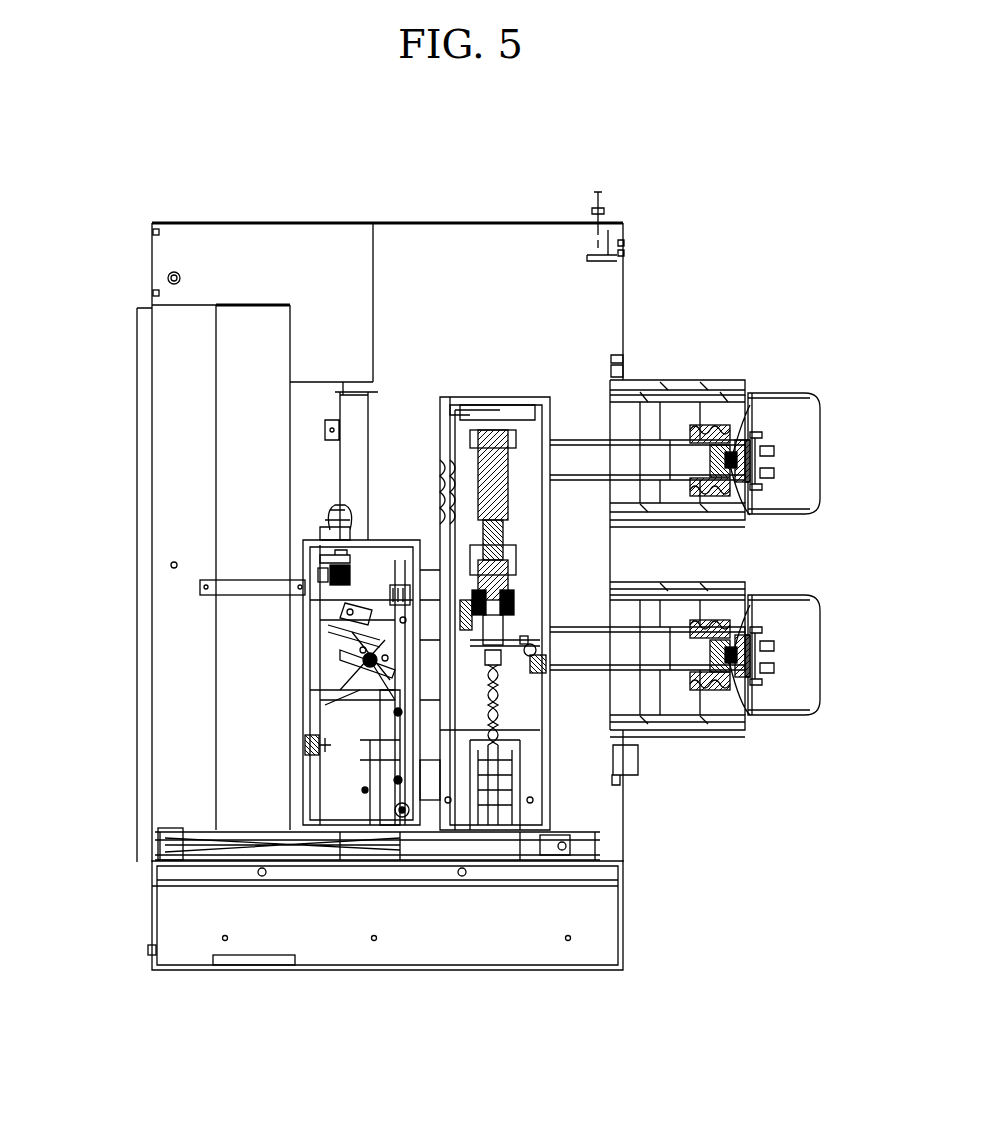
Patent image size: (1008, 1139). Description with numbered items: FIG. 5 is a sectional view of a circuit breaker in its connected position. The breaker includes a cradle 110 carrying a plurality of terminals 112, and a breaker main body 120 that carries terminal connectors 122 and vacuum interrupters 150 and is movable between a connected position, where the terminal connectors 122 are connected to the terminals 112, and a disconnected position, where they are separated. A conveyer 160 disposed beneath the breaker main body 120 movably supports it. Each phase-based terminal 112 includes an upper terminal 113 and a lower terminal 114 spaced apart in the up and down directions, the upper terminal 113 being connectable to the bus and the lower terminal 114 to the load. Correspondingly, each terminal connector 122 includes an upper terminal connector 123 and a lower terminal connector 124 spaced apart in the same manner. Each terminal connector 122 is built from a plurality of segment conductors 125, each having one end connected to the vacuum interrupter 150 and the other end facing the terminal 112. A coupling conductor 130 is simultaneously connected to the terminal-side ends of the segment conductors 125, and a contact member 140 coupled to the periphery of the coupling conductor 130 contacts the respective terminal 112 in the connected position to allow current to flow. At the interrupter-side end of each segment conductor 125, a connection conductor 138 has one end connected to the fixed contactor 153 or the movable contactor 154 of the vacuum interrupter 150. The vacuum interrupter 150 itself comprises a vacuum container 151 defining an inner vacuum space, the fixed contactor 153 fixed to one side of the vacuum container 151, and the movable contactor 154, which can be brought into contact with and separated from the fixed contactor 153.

The cradle 110 is at (642, 240).
The terminal 112 is at (843, 518).
The upper terminal 113 is at (765, 470).
The lower terminal 114 is at (762, 650).
The breaker main body 120 is at (133, 550).
The terminal connector 122 is at (743, 282).
The upper terminal connector 123 is at (711, 318).
The lower terminal connector 124 is at (638, 622).
The segment conductor 125 is at (620, 455).
The coupling conductor 130 is at (663, 455).
The connection conductor 138 is at (540, 465).
The contact member 140 is at (732, 428).
The vacuum interrupter 150 is at (418, 483).
The vacuum container 151 is at (322, 552).
The fixed contactor 153 is at (345, 607).
The movable contactor 154 is at (340, 632).
The conveyer 160 is at (178, 863).